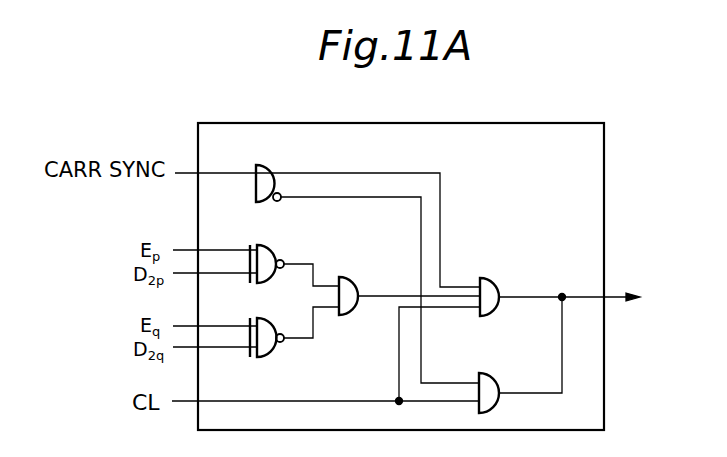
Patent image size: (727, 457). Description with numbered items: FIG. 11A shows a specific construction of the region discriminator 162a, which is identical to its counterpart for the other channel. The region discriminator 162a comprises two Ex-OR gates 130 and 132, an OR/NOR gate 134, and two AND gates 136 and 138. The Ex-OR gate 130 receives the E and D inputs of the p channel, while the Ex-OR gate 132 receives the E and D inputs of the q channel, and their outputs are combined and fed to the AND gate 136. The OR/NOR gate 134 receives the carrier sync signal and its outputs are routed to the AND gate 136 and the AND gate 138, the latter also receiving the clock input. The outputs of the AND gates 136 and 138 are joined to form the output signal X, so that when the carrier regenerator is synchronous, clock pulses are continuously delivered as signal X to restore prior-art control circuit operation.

The region discriminator 162a is at (588, 123).
The OR/NOR gate 134 is at (270, 168).
The Ex-OR gate 130 is at (272, 252).
The Ex-OR gate 132 is at (268, 356).
The AND gate 136 is at (490, 283).
The AND gate 138 is at (497, 378).